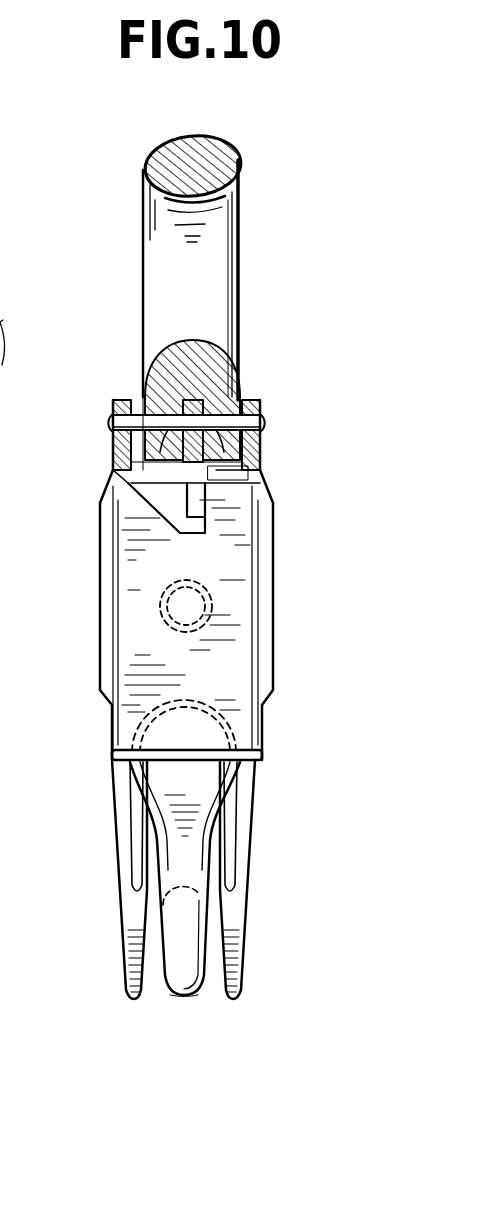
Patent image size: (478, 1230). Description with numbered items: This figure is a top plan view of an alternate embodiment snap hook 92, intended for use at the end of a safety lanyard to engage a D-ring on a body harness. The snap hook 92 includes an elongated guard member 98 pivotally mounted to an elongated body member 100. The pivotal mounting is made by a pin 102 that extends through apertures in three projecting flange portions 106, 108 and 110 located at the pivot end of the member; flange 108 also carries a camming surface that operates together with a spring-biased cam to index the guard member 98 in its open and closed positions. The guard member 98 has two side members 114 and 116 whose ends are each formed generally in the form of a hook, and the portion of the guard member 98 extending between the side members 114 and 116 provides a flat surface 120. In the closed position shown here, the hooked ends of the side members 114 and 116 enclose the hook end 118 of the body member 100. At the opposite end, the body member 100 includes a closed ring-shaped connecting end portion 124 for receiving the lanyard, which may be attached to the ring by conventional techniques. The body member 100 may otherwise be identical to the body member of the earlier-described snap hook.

The snap hook 92 is at (288, 498).
The guard member 98 is at (272, 718).
The body member 100 is at (196, 1006).
The pin 102 is at (148, 420).
The projecting flange portion 106 is at (113, 400).
The projecting flange portion 108 is at (236, 388).
The projecting flange portion 110 is at (250, 404).
The side member 114 is at (125, 927).
The side member 116 is at (240, 908).
The hook end 118 is at (170, 966).
The flat surface 120 is at (228, 564).
The connecting end portion 124 is at (235, 240).